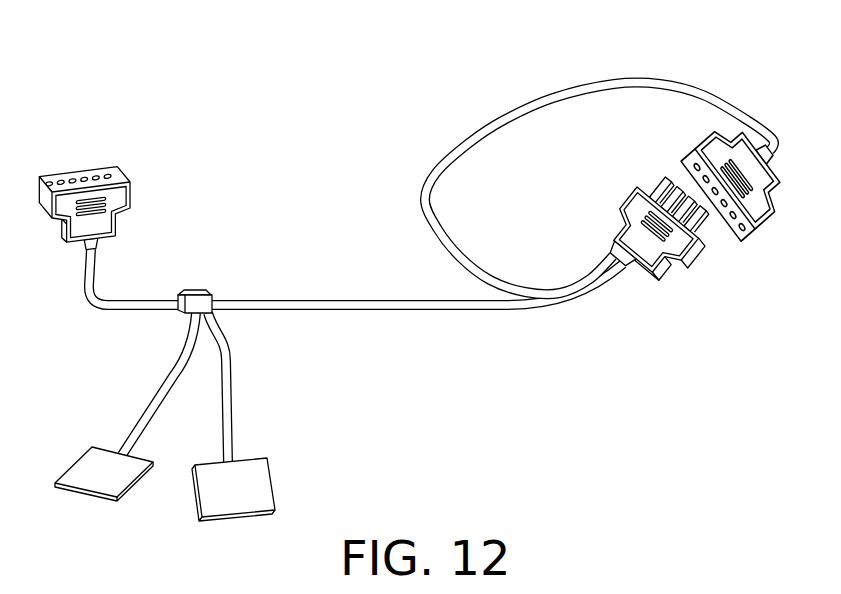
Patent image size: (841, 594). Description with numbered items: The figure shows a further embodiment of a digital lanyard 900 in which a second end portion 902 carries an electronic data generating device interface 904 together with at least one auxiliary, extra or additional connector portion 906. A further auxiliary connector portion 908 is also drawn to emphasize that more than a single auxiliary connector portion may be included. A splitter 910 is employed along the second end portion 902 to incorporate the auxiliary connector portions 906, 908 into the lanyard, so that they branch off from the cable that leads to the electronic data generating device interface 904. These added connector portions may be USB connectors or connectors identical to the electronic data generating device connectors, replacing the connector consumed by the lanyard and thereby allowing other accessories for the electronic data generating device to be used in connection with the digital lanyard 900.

The digital lanyard 900 is at (128, 70).
The second end portion 902 is at (370, 310).
The electronic data generating device interface 904 is at (106, 164).
The auxiliary connector portion 906 is at (73, 465).
The further auxiliary connector portion 908 is at (273, 483).
The splitter 910 is at (196, 290).